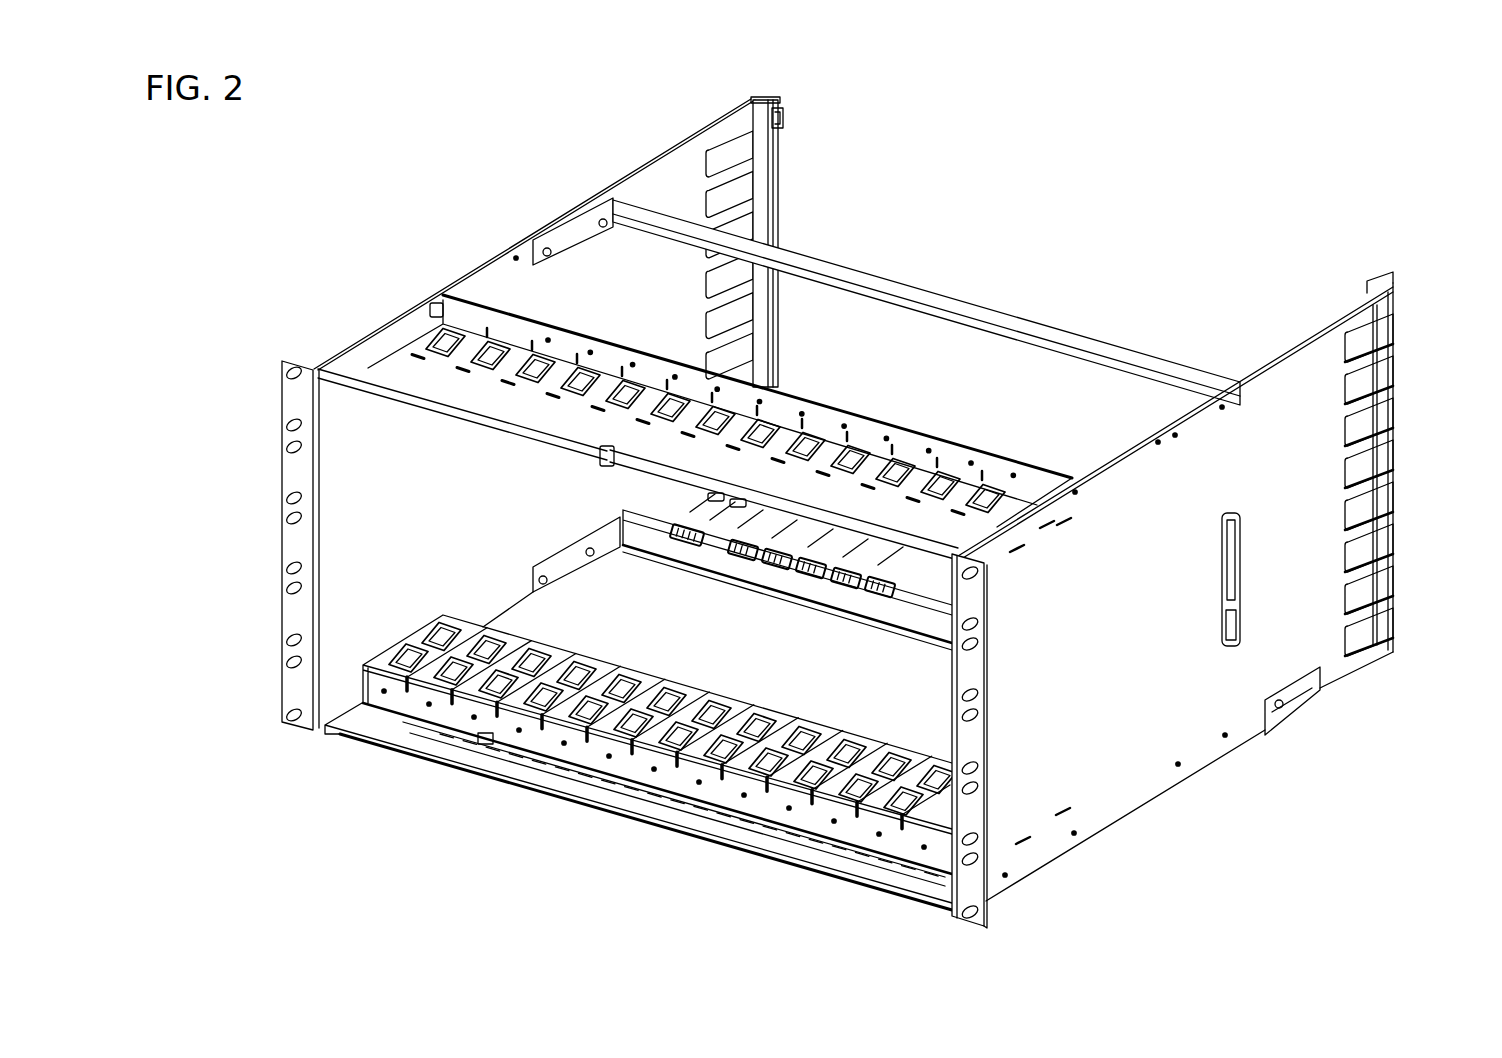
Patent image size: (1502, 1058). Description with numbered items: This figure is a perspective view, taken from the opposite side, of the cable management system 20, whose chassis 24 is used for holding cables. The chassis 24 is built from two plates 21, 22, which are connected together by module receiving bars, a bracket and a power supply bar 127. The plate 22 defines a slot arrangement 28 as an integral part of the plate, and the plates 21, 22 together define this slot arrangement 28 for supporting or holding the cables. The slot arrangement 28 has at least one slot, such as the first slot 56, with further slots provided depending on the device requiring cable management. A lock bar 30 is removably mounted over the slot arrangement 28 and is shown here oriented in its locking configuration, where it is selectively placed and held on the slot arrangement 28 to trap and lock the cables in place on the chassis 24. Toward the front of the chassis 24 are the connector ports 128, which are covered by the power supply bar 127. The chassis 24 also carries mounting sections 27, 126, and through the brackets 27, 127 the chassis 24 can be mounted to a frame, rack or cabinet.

The cable management system 20 is at (797, 221).
The plate 21 is at (1140, 800).
The plate 22 is at (483, 262).
The chassis 24 is at (952, 190).
The bracket (mounting section) 27 is at (295, 367).
The slot arrangement 28 is at (802, 340).
The lock bar 30 is at (779, 197).
The slot 56 is at (735, 130).
The mounting section 126 is at (988, 602).
The power supply bar 127 is at (905, 580).
The connector ports 128 is at (810, 567).